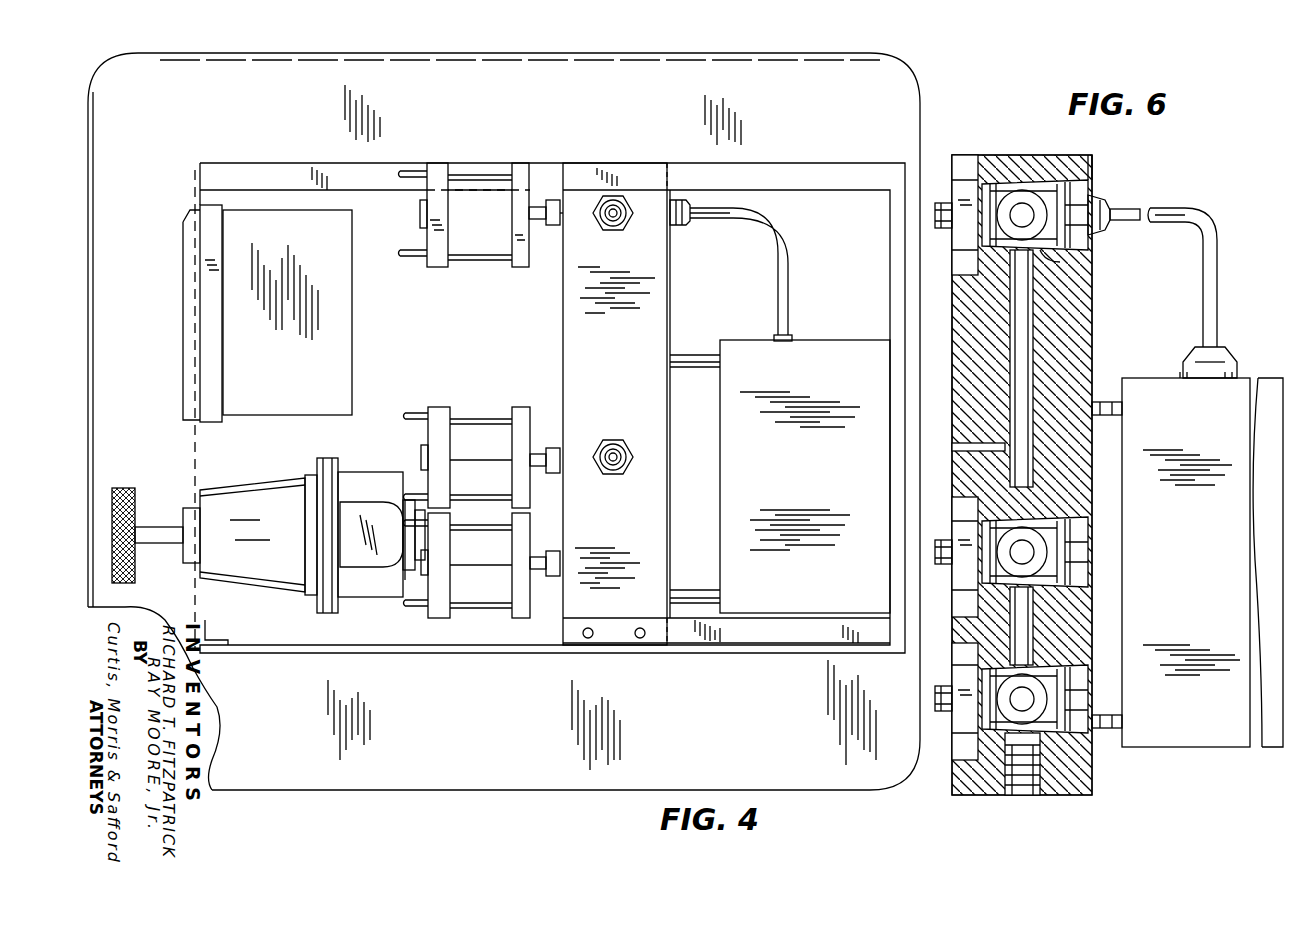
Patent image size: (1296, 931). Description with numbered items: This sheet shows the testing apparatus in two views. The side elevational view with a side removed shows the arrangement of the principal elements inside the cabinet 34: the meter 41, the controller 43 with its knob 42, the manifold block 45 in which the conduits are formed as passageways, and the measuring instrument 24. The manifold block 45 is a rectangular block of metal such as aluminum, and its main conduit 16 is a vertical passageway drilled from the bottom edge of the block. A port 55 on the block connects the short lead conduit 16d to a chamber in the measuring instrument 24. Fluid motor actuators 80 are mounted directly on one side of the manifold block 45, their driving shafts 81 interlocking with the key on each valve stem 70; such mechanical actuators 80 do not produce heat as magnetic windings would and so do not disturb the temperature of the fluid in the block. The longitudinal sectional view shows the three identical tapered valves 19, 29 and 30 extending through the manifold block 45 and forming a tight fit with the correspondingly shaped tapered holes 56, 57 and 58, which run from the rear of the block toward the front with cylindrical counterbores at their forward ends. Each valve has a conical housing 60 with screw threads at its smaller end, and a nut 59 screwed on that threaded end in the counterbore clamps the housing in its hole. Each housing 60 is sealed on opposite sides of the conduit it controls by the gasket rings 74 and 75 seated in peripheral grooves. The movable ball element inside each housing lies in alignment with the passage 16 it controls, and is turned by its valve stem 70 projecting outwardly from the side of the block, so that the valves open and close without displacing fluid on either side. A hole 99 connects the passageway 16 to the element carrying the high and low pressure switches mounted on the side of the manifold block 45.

In FIG. 4, the cabinet 34 is at (914, 86).
In FIG. 4, the meter 41 is at (352, 378).
In FIG. 4, the knob 42 is at (138, 498).
In FIG. 4, the controller 43 is at (281, 490).
In FIG. 4, the mechanical actuator 80 is at (471, 265).
In FIG. 4, the driving shaft 81 is at (548, 222).
In FIG. 4, the manifold block 45 is at (563, 330).
In FIG. 6, the manifold block 45 is at (1091, 308).
In FIG. 4, the port 55 is at (677, 226).
In FIG. 4, the short lead conduit 16d is at (731, 222).
In FIG. 6, the short lead conduit 16d is at (1216, 295).
In FIG. 4, the measuring instrument 24 is at (724, 341).
In FIG. 6, the measuring instrument 24 is at (1126, 748).
In FIG. 6, the nut 59 is at (963, 166).
In FIG. 6, the valve stem 70 is at (944, 230).
In FIG. 6, the ring gasket 75 is at (993, 180).
In FIG. 6, the ring gasket 74 is at (1060, 178).
In FIG. 6, the tapered hole 58 is at (1092, 162).
In FIG. 6, the tapered valve 29 is at (1092, 186).
In FIG. 6, the conical valve housing 60 is at (1058, 262).
In FIG. 6, the main conduit 16 is at (1025, 352).
In FIG. 6, the hole 99 is at (952, 450).
In FIG. 6, the tapered hole 57 is at (1073, 518).
In FIG. 6, the tapered valve 30 is at (1066, 536).
In FIG. 6, the tapered hole 56 is at (1076, 672).
In FIG. 6, the tapered valve 19 is at (1060, 680).